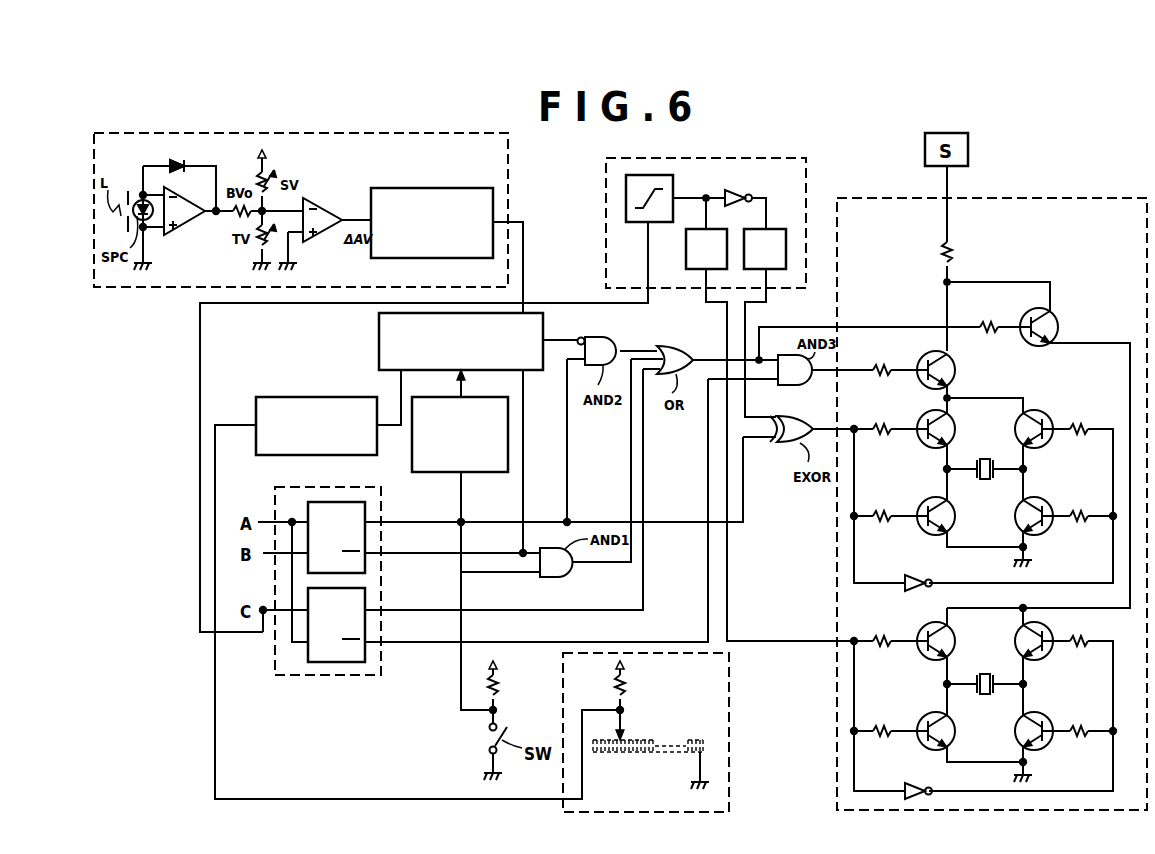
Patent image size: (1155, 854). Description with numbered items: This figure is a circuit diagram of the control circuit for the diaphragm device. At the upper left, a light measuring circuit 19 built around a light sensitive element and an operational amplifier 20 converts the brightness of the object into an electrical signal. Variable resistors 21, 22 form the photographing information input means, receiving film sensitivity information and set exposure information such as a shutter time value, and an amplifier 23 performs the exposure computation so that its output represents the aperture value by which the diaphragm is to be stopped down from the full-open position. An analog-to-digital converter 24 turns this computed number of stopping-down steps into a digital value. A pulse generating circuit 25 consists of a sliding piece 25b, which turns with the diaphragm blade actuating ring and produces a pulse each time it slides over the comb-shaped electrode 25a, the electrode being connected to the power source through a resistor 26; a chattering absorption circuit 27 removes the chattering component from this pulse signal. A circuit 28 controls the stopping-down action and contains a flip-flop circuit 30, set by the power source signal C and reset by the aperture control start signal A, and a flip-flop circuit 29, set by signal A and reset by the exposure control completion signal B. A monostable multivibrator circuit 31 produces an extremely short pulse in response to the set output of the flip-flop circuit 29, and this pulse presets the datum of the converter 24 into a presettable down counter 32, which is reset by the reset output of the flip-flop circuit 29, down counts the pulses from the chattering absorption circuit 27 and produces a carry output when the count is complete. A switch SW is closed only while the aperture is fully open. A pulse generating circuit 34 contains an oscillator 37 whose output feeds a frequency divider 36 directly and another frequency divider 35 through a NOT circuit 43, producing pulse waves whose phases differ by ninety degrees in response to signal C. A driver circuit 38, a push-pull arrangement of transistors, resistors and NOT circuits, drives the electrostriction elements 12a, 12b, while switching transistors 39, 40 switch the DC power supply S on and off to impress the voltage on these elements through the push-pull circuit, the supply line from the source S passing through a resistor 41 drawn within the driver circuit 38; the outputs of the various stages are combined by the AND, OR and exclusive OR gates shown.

The light measuring circuit 19 is at (512, 164).
The operational amplifier 20 is at (185, 225).
The variable resistor 21 is at (258, 172).
The variable resistor 22 is at (243, 218).
The amplifier 23 is at (320, 200).
The analog-to-digital converter 24 is at (462, 188).
The pulse generating circuit 25 is at (732, 735).
The electrode 25a is at (628, 752).
The sliding piece 25b is at (626, 716).
The resistor 26 is at (610, 690).
The chattering absorption circuit 27 is at (323, 397).
The circuit 28 is at (315, 677).
The flip-flop circuit 29 is at (368, 507).
The flip-flop circuit 30 is at (368, 652).
The monostable multivibrator circuit 31 is at (480, 472).
The presettable down counter 32 is at (378, 335).
The pulse generating circuit 34 is at (810, 166).
The frequency divider 35 is at (770, 229).
The frequency divider 36 is at (686, 243).
The oscillator 37 is at (640, 222).
The driver circuit 38 is at (1045, 197).
The switching transistor 39 is at (956, 360).
The switching transistor 40 is at (1060, 322).
The resistor 41 is at (955, 254).
The NOT circuit 43 is at (722, 192).
The electrostriction element 12a is at (982, 458).
The electrostriction element 12b is at (982, 673).